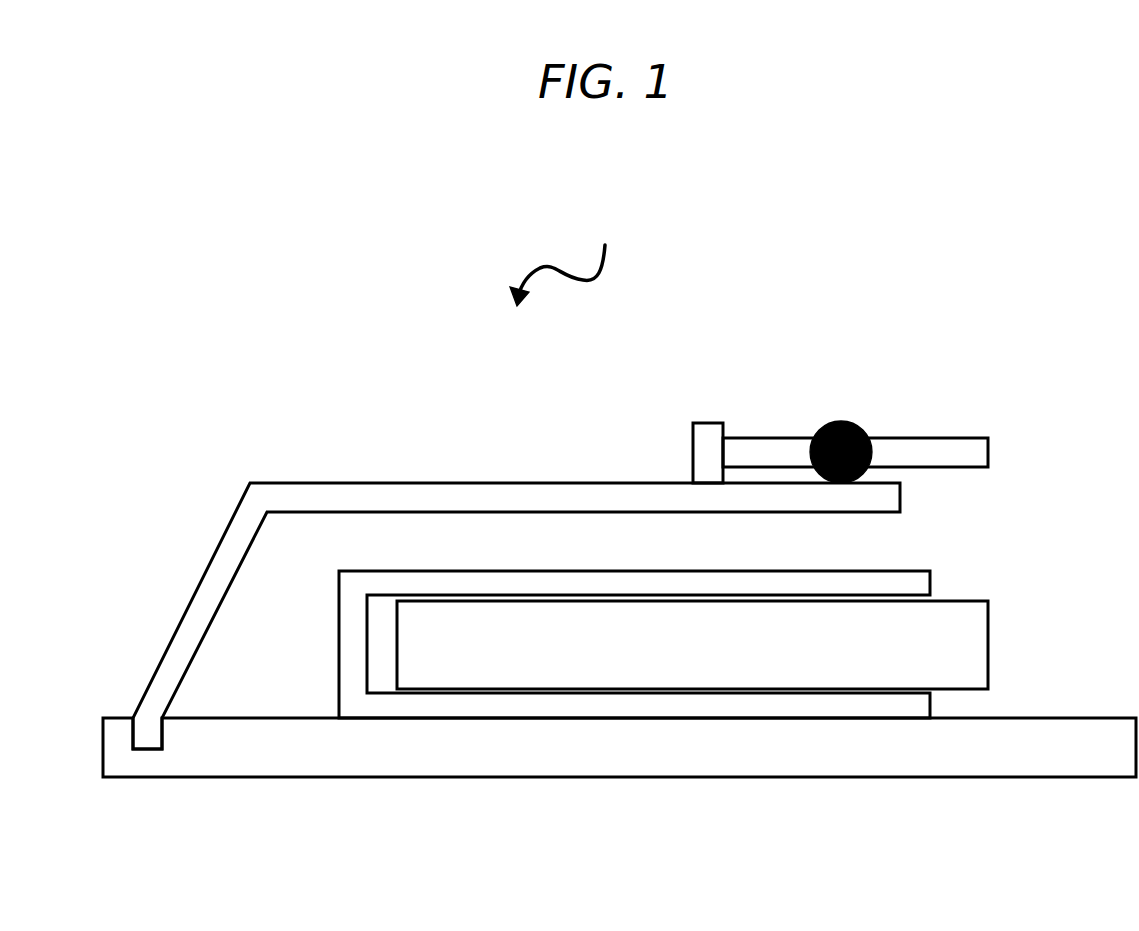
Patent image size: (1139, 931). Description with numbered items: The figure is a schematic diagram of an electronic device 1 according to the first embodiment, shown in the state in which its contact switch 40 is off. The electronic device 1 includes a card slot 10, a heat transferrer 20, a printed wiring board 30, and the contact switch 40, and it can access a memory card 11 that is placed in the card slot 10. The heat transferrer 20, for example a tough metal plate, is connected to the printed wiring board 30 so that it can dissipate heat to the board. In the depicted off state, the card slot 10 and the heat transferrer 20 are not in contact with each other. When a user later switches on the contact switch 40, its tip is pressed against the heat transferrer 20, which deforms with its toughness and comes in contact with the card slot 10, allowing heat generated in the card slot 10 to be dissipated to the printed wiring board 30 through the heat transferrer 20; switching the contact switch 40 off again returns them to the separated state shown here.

The electronic device 1 is at (614, 229).
The card slot 10 is at (339, 628).
The memory card 11 is at (988, 629).
The heat transferrer 20 is at (338, 481).
The printed wiring board 30 is at (840, 777).
The contact switch 40 is at (928, 437).